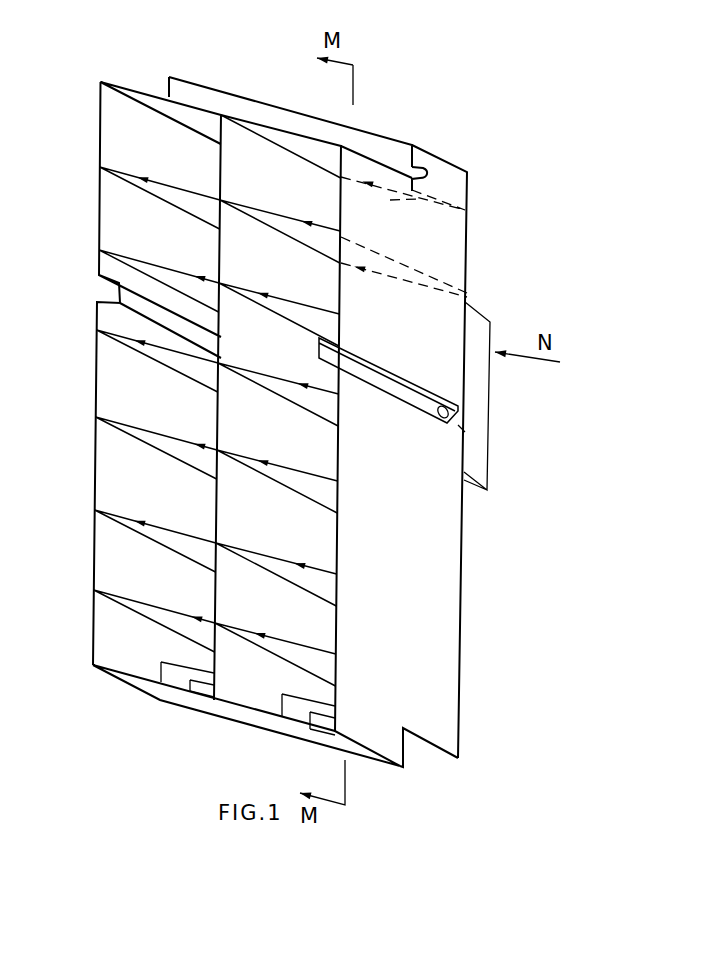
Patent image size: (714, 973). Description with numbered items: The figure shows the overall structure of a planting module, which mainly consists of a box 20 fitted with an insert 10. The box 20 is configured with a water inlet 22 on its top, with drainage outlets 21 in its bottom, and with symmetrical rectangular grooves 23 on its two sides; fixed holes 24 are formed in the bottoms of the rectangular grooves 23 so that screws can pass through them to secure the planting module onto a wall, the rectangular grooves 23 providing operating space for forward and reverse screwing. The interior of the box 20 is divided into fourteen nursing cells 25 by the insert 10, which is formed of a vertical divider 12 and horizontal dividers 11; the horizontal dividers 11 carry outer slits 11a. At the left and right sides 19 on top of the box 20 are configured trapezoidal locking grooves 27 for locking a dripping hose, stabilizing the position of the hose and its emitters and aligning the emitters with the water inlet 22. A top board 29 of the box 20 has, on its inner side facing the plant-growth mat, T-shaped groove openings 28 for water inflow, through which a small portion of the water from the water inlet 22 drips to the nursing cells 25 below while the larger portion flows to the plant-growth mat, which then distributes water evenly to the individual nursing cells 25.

The insert 10 is at (205, 482).
The horizontal dividers 11 is at (185, 203).
The outer slits 11a is at (140, 177).
The vertical divider 12 is at (216, 500).
The left and right sides 19 is at (447, 540).
The box 20 is at (482, 168).
The drainage outlets 21 is at (198, 688).
The water inlet 22 is at (258, 108).
The rectangular grooves 23 is at (319, 353).
The fixed holes 24 is at (437, 417).
The nursing cells 25 is at (130, 400).
The locking grooves 27 is at (425, 170).
The T-shaped groove openings 28 is at (368, 182).
The top board 29 is at (135, 90).